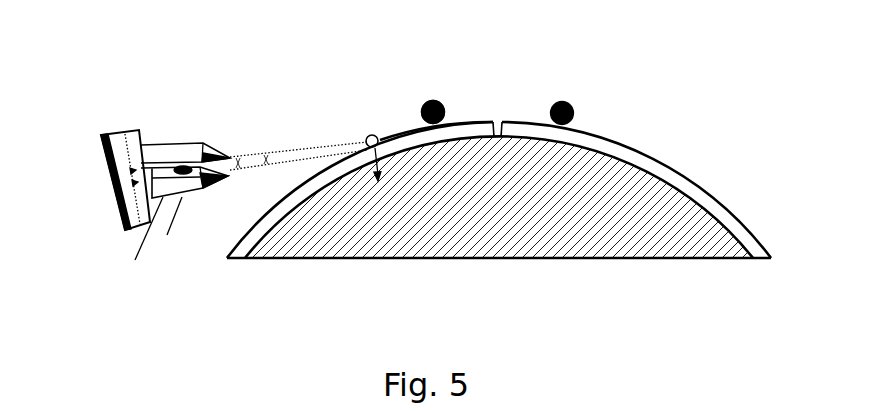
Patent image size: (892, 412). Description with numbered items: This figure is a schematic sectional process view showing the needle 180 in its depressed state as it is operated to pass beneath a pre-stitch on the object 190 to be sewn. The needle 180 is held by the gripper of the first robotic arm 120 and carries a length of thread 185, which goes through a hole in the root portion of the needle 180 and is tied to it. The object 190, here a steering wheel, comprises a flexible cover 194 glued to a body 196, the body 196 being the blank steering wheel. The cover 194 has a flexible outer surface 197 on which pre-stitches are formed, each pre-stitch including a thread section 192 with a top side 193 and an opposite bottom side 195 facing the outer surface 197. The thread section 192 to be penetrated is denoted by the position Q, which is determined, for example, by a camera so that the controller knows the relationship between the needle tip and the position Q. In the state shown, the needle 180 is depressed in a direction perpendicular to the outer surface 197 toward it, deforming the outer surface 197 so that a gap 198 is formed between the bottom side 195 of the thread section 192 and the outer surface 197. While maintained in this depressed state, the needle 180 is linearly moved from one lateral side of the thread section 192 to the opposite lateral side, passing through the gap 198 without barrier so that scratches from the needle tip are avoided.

The first robotic arm 120 is at (167, 118).
The needle 180 is at (268, 158).
The thread 185 is at (153, 202).
The object 190 is at (559, 196).
The thread section 192 is at (560, 103).
The top side 193 is at (425, 102).
The flexible cover 194 is at (499, 171).
The bottom side 195 is at (428, 123).
The body 196 is at (517, 233).
The outer surface 197 is at (510, 121).
The gap 198 is at (437, 125).
The position Q is at (442, 102).